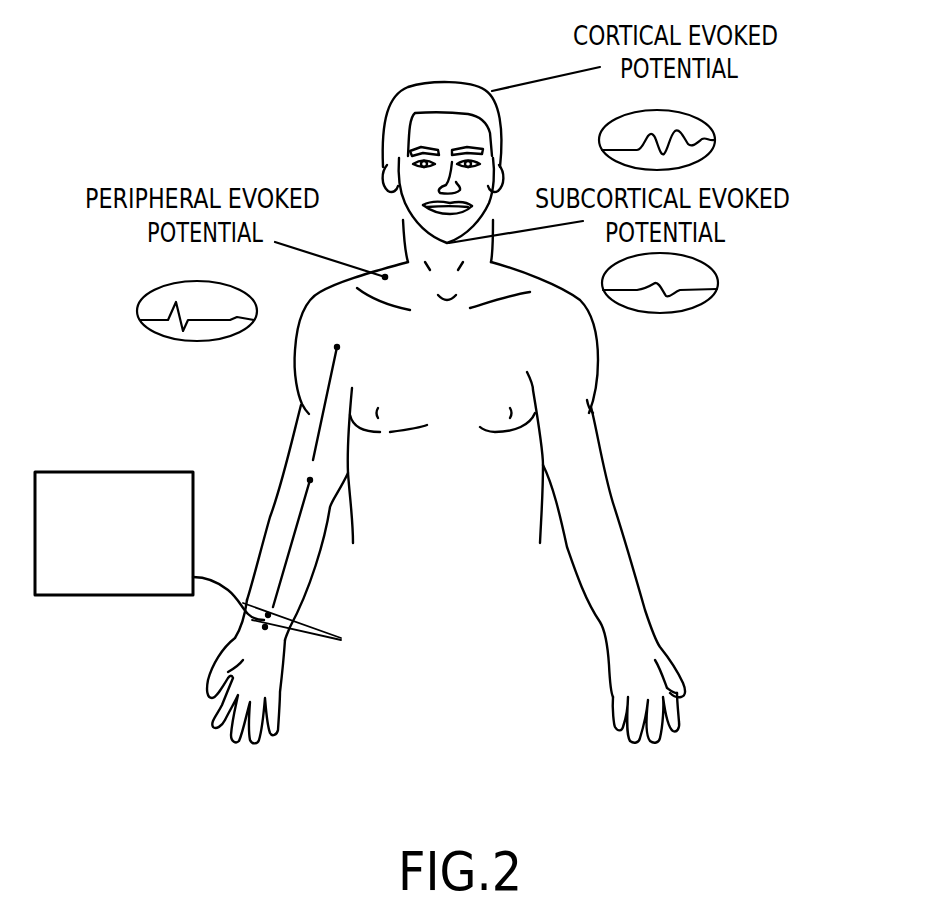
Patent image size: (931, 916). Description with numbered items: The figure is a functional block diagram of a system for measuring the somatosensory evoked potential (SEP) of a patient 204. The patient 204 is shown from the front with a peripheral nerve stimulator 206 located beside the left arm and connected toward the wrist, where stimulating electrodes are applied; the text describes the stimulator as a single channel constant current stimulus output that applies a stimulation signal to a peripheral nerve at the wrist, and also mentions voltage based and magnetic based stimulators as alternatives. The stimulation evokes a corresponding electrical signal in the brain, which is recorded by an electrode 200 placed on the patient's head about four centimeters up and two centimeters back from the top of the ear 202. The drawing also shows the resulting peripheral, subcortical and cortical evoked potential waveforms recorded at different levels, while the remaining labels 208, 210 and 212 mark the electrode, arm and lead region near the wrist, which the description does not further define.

The electrode 200 is at (492, 91).
The ear 202 is at (519, 169).
The patient 204 is at (575, 355).
The peripheral nerve stimulator 206 is at (142, 472).
The stimulating electrodes 208 is at (277, 655).
The peripheral nerve in arm 210 is at (336, 598).
The lead wire from stimulator to electrodes 212 is at (238, 640).